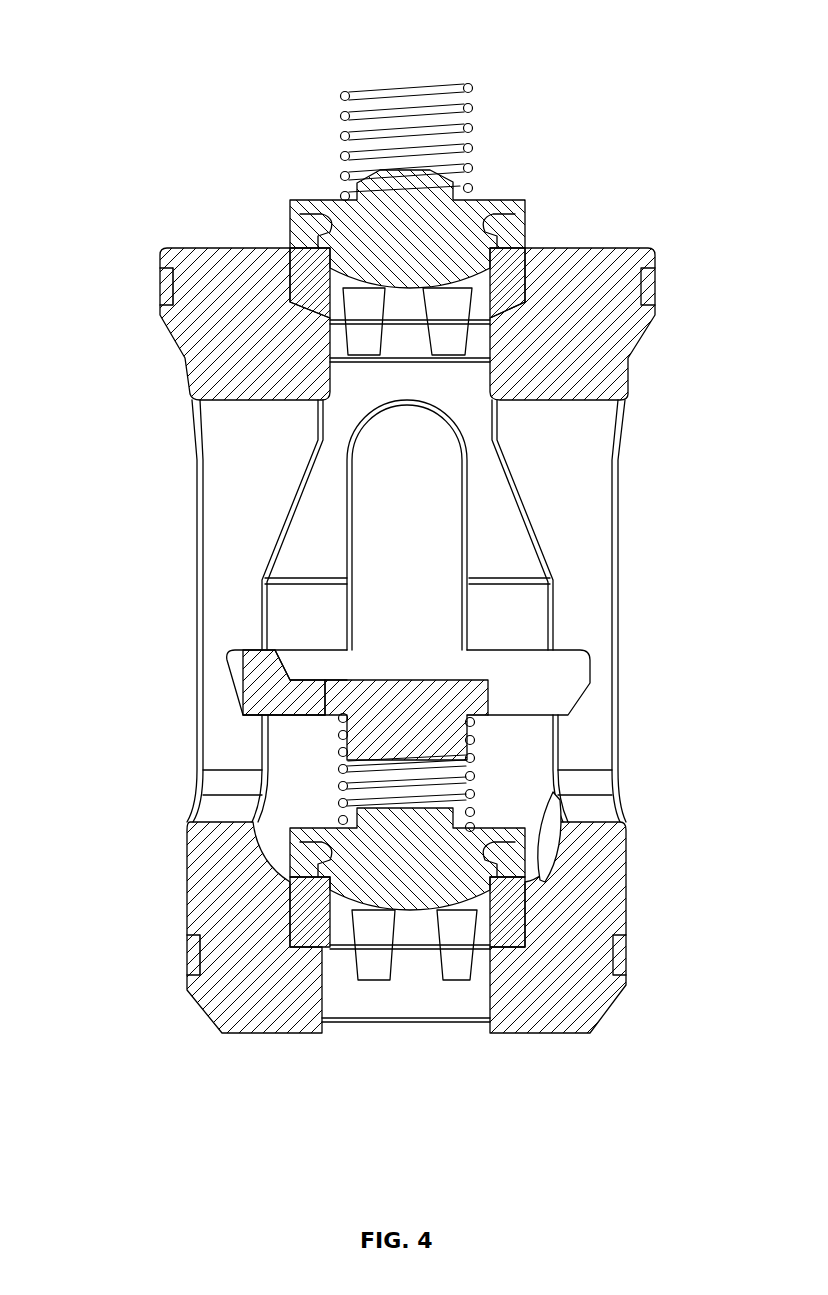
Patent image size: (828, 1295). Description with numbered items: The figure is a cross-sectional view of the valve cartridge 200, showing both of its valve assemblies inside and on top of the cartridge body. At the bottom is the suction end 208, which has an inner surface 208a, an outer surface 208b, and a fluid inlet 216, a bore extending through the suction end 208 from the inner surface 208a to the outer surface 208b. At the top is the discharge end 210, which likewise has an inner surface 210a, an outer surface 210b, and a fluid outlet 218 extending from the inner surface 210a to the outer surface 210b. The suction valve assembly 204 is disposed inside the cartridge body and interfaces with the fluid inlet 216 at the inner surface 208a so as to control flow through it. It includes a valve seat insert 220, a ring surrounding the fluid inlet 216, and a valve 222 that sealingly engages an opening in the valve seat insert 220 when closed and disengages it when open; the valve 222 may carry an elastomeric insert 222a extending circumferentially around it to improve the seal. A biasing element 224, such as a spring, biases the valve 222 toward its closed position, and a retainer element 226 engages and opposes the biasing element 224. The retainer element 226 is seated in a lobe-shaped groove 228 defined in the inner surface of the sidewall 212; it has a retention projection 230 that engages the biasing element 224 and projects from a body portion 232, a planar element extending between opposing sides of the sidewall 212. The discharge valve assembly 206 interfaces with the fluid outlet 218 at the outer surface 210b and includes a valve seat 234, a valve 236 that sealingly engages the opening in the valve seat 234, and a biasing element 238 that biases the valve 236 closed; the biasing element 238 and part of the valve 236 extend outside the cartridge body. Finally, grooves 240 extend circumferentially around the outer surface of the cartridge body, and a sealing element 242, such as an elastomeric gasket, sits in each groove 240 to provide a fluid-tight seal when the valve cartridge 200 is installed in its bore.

The valve cartridge 200 is at (146, 25).
The suction valve assembly 204 is at (406, 580).
The discharge valve assembly 206 is at (373, 201).
The suction end 208 is at (412, 939).
The inner surface 208a is at (530, 858).
The outer surface 208b is at (276, 1034).
The discharge end 210 is at (367, 605).
The inner surface 210a is at (247, 400).
The outer surface 210b is at (222, 248).
The sidewall 212 is at (622, 485).
The fluid inlet 216 is at (422, 1003).
The fluid outlet 218 is at (412, 343).
The valve seat insert 220 is at (290, 922).
The valve 222 is at (407, 859).
The elastomeric insert 222a is at (320, 866).
The biasing element 224 is at (343, 800).
The retainer element 226 is at (372, 680).
The groove 228 is at (232, 672).
The retention projection 230 is at (467, 742).
The body portion 232 is at (278, 716).
The valve seat 234 is at (322, 318).
The valve 236 is at (425, 272).
The biasing element 238 is at (345, 130).
The groove 240 is at (170, 287).
The sealing element 242 is at (167, 280).